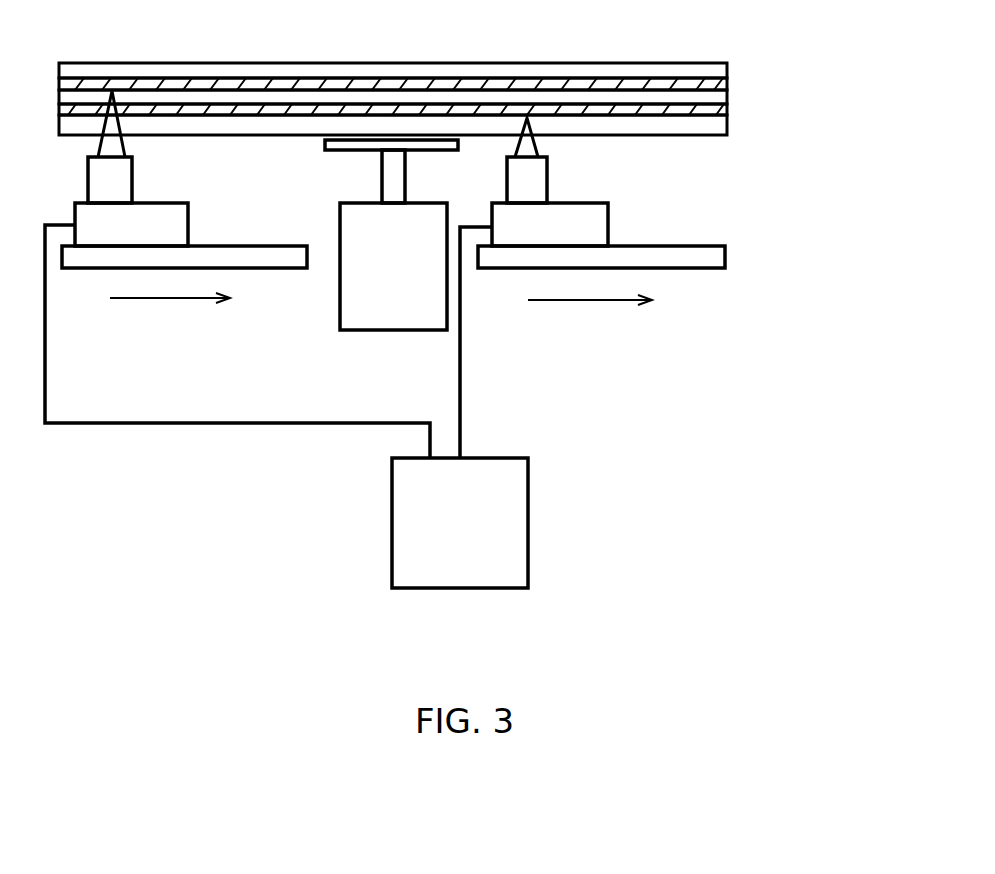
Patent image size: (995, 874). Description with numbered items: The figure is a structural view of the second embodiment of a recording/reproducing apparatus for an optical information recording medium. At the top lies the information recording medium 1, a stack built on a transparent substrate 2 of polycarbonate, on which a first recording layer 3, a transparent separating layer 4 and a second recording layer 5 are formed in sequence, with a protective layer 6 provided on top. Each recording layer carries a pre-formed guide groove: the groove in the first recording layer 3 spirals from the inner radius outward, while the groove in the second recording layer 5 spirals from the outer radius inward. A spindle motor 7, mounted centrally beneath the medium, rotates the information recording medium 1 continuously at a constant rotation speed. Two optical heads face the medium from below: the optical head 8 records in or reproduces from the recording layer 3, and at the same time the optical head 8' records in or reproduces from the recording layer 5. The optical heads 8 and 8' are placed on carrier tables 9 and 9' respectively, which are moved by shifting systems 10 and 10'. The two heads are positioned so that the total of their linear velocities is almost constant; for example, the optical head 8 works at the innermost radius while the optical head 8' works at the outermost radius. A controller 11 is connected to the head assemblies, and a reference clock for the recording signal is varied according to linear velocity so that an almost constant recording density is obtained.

The information recording medium 1 is at (470, 100).
The transparent substrate 2 is at (439, 149).
The first recording layer 3 is at (727, 113).
The transparent separating layer 4 is at (727, 98).
The second recording layer 5 is at (727, 84).
The protective layer 6 is at (727, 68).
The spindle motor 7 is at (360, 330).
The optical head 8 is at (573, 160).
The optical head 8' is at (160, 147).
The carrier table 9 is at (597, 219).
The carrier table 9' is at (185, 217).
The shifting system 10 is at (654, 258).
The shifting system 10' is at (184, 316).
The controller 11 is at (528, 518).